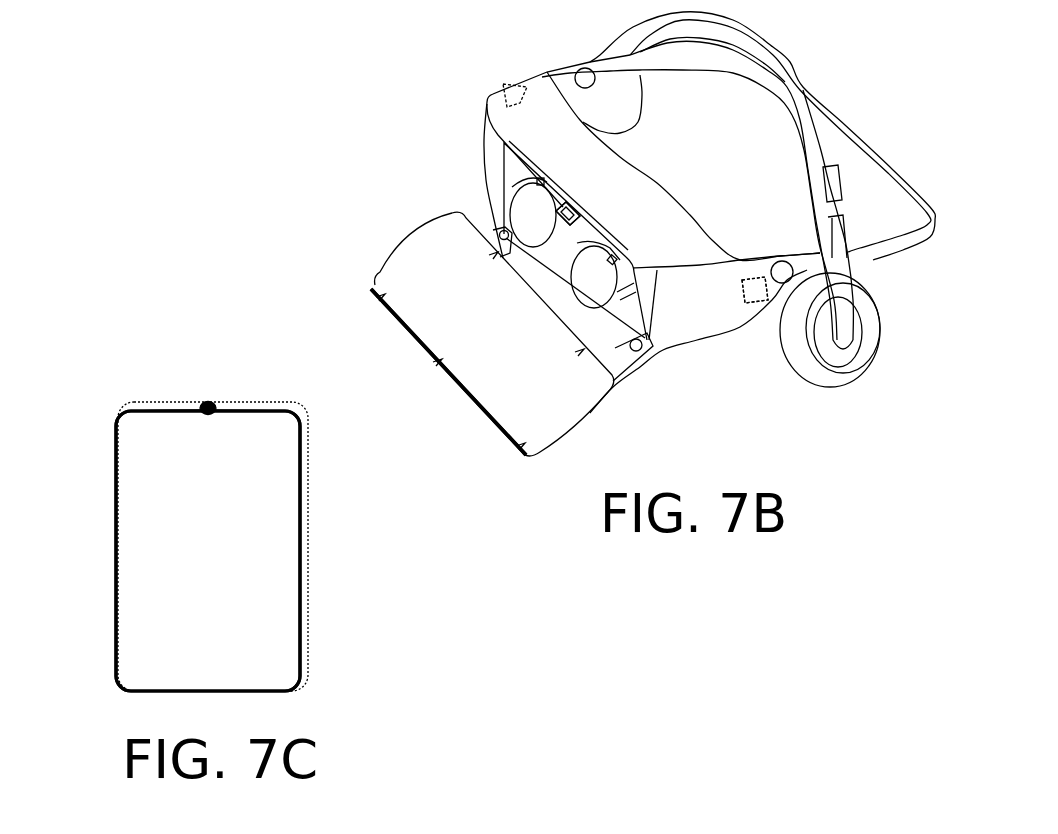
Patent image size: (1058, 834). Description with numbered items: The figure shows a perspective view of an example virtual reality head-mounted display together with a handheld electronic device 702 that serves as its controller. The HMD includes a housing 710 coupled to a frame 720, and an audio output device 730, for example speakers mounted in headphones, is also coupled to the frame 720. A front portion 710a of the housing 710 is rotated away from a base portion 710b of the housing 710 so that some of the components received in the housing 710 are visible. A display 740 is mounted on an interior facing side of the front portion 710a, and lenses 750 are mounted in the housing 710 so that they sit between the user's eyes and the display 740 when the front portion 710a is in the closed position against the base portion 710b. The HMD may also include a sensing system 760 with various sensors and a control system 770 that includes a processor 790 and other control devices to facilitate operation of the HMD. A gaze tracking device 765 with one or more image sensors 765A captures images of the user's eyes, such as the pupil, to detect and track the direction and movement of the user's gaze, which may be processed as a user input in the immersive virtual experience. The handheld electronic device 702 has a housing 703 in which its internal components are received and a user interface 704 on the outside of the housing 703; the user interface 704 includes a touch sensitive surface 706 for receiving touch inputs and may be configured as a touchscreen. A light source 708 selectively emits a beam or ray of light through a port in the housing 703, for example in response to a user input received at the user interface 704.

In FIG. 7B, the housing 710 is at (491, 82).
In FIG. 7B, the front portion 710a is at (377, 300).
In FIG. 7B, the base portion 710b is at (527, 83).
In FIG. 7B, the frame 720 is at (897, 157).
In FIG. 7B, the audio output device 730 is at (883, 290).
In FIG. 7B, the display 740 is at (413, 258).
In FIG. 7B, the lenses 750 is at (508, 213).
In FIG. 7B, the sensing system 760 is at (487, 98).
In FIG. 7B, the gaze tracking device 765 is at (577, 210).
In FIG. 7B, the image sensor 765A is at (580, 207).
In FIG. 7B, the control system 770 is at (750, 297).
In FIG. 7B, the processor 790 is at (755, 290).
In FIG. 7C, the handheld electronic device 702 is at (97, 400).
In FIG. 7C, the housing 703 is at (158, 404).
In FIG. 7C, the user interface 704 is at (118, 570).
In FIG. 7C, the touch sensitive surface 706 is at (137, 522).
In FIG. 7C, the light source 708 is at (207, 403).